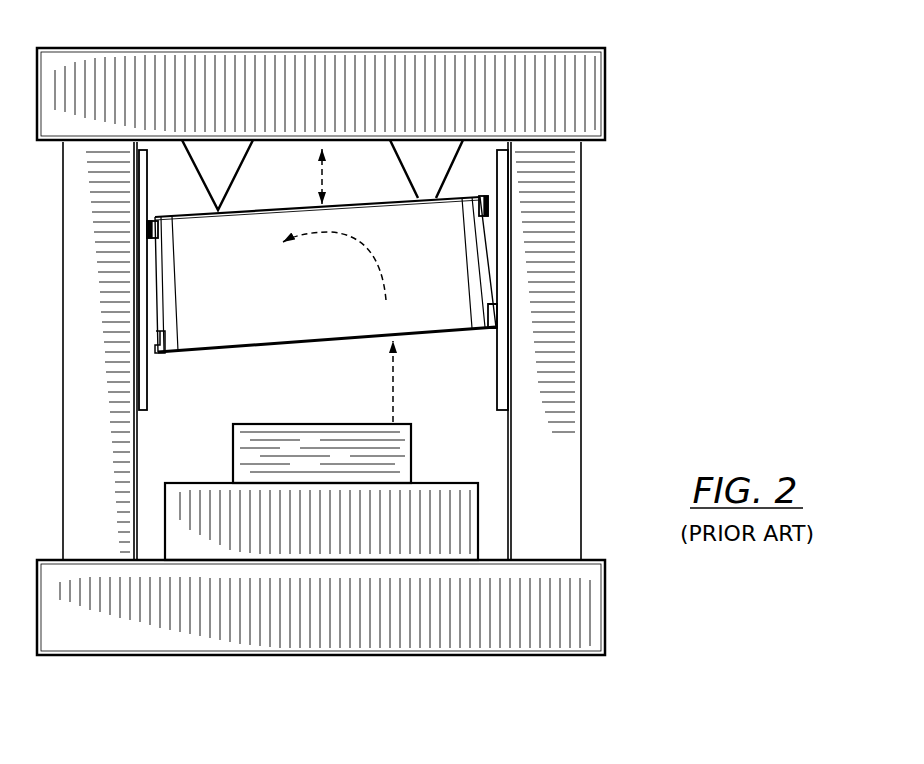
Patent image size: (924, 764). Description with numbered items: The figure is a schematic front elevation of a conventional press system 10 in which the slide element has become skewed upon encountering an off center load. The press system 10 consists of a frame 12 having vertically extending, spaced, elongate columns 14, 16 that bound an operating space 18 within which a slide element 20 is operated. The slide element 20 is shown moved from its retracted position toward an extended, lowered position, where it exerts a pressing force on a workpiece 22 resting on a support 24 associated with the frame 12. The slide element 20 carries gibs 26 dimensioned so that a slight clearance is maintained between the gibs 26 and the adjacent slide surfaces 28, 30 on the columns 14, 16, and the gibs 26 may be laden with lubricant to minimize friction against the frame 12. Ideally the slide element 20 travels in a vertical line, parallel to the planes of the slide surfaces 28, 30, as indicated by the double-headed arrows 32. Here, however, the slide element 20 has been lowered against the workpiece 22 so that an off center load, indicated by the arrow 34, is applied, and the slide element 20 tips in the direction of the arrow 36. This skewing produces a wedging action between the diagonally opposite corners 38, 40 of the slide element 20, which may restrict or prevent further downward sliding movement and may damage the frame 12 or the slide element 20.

The press system 10 is at (654, 77).
The frame 12 is at (584, 206).
The column 14 is at (78, 322).
The column 16 is at (556, 330).
The operating space 18 is at (211, 442).
The slide element 20 is at (323, 297).
The workpiece 22 is at (378, 447).
The support 24 is at (445, 522).
The gib 26 is at (148, 234).
The slide surface 28 is at (150, 313).
The slide surface 30 is at (480, 262).
The double-headed arrow 32 is at (330, 163).
The arrow 34 is at (396, 395).
The arrow 36 is at (356, 270).
The corner 38 is at (152, 213).
The corner 40 is at (504, 334).